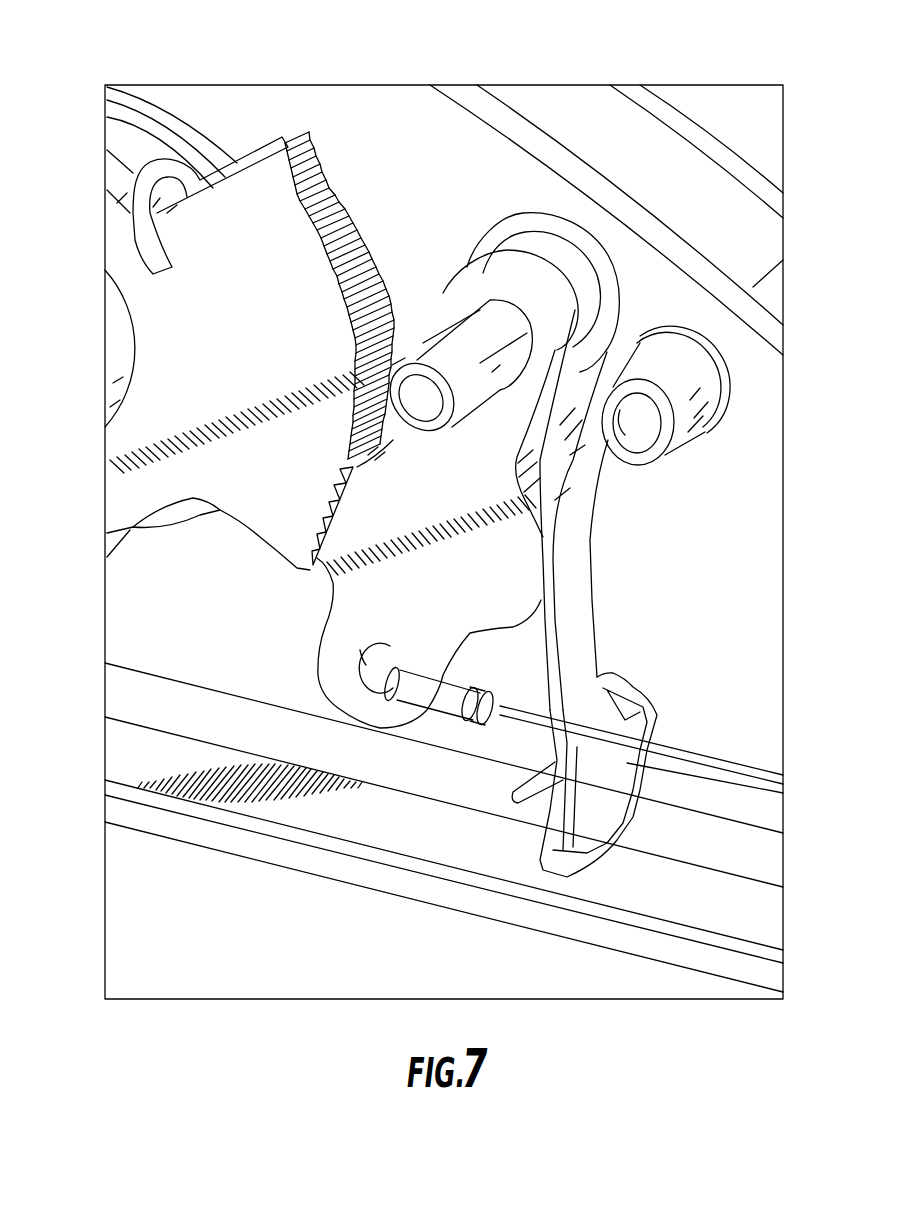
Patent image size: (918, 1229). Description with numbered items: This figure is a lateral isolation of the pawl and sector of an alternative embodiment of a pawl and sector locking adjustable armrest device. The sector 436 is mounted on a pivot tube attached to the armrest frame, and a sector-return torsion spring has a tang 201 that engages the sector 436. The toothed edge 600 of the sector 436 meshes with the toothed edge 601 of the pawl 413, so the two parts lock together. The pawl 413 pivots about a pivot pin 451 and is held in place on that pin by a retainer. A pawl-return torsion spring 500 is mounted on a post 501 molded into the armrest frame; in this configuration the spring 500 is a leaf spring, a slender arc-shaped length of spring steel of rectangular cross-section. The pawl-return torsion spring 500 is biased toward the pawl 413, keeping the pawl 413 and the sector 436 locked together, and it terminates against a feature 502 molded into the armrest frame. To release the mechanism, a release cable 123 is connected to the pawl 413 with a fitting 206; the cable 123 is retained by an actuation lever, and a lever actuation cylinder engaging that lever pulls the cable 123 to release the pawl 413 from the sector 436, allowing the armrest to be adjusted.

The tang 201 is at (187, 178).
The toothed edge 600 is at (355, 347).
The toothed edge 601 is at (347, 523).
The pivot pin 451 is at (431, 352).
The sector 436 is at (190, 337).
The pawl 413 is at (353, 622).
The fitting 206 is at (443, 710).
The release cable 123 is at (708, 765).
The pawl-return torsion spring 500 is at (567, 622).
The post 501 is at (640, 432).
The feature 502 is at (597, 820).